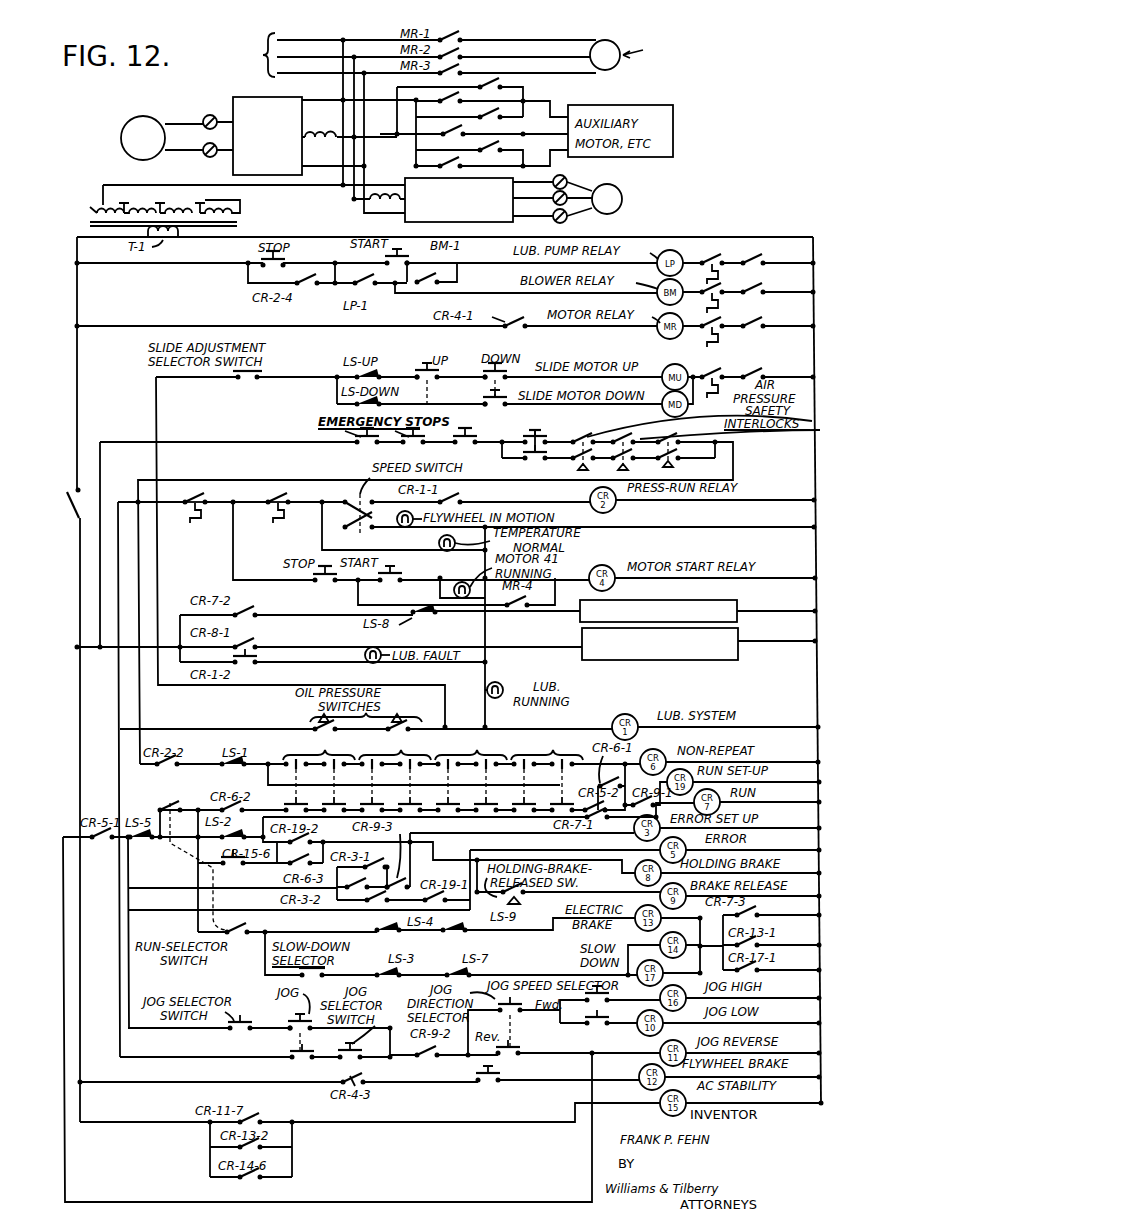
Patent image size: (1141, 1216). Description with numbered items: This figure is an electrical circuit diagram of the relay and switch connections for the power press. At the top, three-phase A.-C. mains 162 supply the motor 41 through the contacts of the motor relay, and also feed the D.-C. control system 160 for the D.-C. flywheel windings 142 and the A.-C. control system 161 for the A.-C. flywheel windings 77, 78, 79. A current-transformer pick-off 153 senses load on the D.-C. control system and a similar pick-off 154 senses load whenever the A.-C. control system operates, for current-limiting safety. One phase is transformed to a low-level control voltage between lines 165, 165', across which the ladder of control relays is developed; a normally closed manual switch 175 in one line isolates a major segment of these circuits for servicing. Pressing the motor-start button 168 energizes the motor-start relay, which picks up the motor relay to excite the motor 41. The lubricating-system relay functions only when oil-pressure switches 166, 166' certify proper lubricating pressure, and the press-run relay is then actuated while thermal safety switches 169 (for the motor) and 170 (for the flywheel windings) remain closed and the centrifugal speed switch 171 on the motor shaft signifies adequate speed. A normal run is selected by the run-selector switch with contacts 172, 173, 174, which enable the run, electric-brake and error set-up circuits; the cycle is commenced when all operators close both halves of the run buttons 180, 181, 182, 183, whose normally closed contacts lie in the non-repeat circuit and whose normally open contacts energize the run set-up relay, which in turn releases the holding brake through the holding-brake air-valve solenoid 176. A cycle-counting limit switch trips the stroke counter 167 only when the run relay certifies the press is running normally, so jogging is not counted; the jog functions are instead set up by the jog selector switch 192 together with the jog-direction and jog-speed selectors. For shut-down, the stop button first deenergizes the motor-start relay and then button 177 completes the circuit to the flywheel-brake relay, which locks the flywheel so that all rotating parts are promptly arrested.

The three-phase A.-C. mains 162 is at (262, 45).
The D.-C. control system 160 is at (250, 97).
The current-transformer pick-off 153 is at (322, 132).
The current-transformer pick-off 154 is at (380, 193).
The motor 41 is at (613, 46).
The D.-C. flywheel windings 142 is at (133, 156).
The A.-C. control system 161 is at (505, 222).
The A.-C. flywheel winding 77 is at (631, 210).
The A.-C. flywheel winding 78 is at (635, 197).
The A.-C. flywheel winding 79 is at (635, 212).
The control-voltage line 165 is at (59, 679).
The control-voltage line 165' is at (790, 670).
The manual switch 175 is at (74, 506).
The thermal safety switch 169 is at (203, 491).
The thermal safety switch 170 is at (288, 491).
The speed switch 171 is at (354, 496).
The motor-start button 168 is at (392, 567).
The stroke counter 167 is at (737, 605).
The holding-brake air-valve solenoid 176 is at (738, 660).
The run-selector switch contact 172 is at (165, 804).
The run-selector switch contact 173 is at (233, 857).
The run-selector switch contact 174 is at (240, 930).
The run button 180 is at (319, 774).
The run button 181 is at (395, 776).
The run button 182 is at (471, 773).
The run button 183 is at (547, 773).
The oil-pressure switch 166 is at (346, 733).
The oil-pressure switch 166' is at (418, 729).
The flywheel-brake button 177 is at (497, 1075).
The jog button 192 is at (292, 1020).